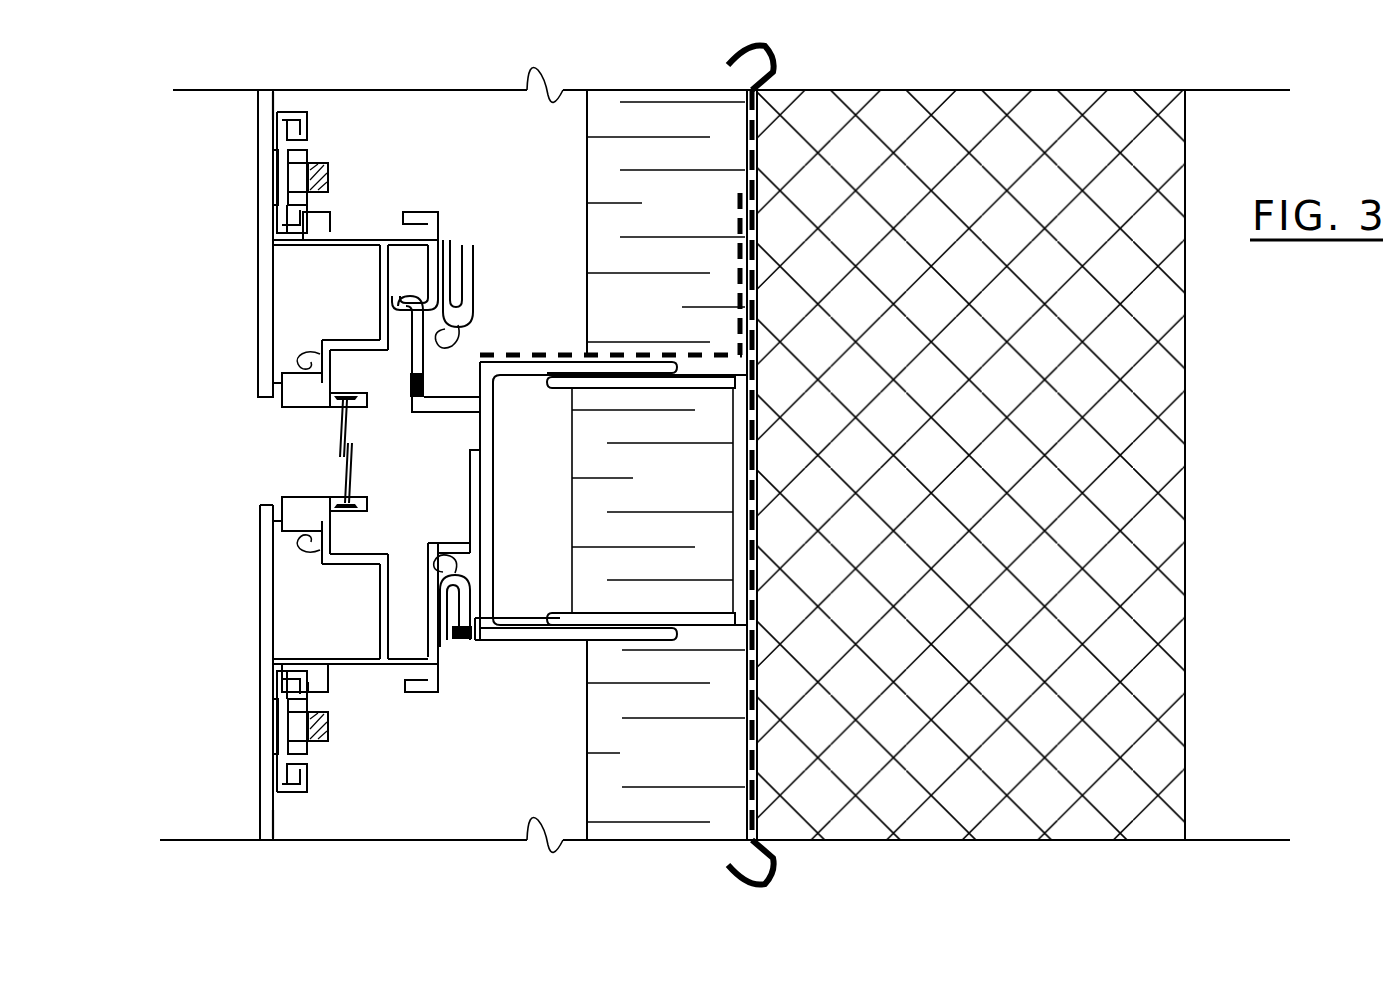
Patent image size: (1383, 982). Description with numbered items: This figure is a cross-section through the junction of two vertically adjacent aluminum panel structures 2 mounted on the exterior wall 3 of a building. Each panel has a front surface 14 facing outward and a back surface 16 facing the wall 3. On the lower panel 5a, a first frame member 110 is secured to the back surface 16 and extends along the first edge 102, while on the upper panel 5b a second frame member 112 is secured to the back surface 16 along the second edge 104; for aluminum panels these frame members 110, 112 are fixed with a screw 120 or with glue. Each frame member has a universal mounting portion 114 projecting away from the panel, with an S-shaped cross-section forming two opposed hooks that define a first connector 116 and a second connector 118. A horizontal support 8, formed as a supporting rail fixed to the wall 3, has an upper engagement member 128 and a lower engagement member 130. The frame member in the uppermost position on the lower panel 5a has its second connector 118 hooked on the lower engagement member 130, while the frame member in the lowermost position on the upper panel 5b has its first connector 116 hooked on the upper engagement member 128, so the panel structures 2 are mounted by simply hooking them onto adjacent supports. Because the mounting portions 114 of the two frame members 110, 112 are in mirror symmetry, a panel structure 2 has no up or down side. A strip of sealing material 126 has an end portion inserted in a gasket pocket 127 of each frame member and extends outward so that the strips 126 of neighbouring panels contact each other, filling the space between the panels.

The panel structure 2 is at (146, 212).
The wall 3 is at (900, 112).
The lower panel 5a is at (256, 604).
The upper panel 5b is at (256, 188).
The horizontal support 8 is at (487, 497).
The front surface 14 is at (262, 165).
The back surface 16 is at (275, 100).
The first edge 102 is at (268, 508).
The second edge 104 is at (268, 397).
The first frame member 110 is at (370, 692).
The second frame member 112 is at (362, 214).
The mounting portion 114 is at (446, 197).
The first connector 116 is at (427, 258).
The second connector 118 is at (448, 303).
The screw 120 is at (329, 174).
The strip of sealing material 126 is at (340, 467).
The gasket pocket 127 is at (372, 495).
The upper engagement member 128 is at (420, 367).
The lower engagement member 130 is at (455, 640).